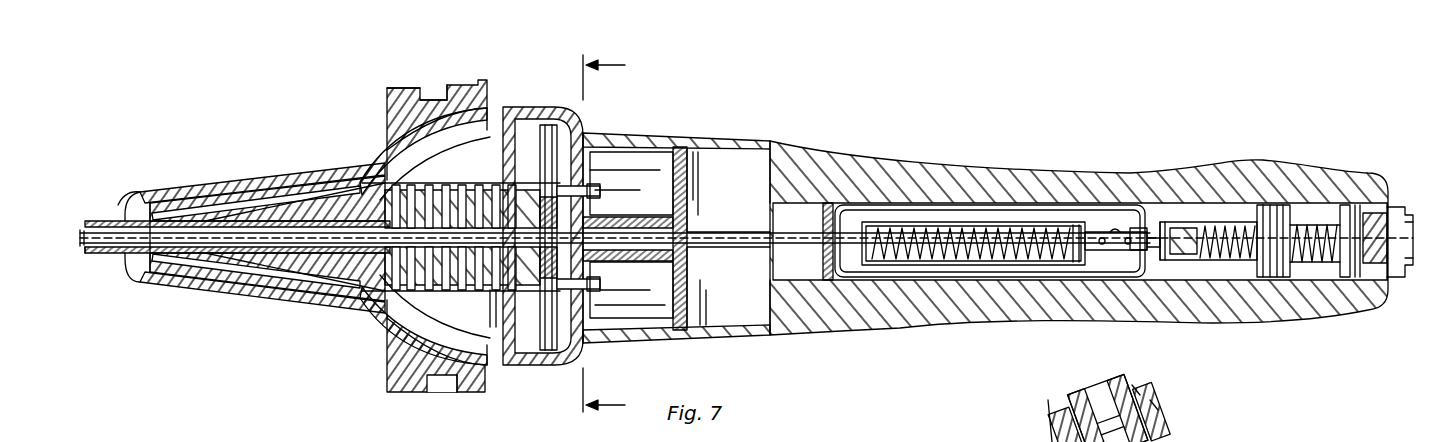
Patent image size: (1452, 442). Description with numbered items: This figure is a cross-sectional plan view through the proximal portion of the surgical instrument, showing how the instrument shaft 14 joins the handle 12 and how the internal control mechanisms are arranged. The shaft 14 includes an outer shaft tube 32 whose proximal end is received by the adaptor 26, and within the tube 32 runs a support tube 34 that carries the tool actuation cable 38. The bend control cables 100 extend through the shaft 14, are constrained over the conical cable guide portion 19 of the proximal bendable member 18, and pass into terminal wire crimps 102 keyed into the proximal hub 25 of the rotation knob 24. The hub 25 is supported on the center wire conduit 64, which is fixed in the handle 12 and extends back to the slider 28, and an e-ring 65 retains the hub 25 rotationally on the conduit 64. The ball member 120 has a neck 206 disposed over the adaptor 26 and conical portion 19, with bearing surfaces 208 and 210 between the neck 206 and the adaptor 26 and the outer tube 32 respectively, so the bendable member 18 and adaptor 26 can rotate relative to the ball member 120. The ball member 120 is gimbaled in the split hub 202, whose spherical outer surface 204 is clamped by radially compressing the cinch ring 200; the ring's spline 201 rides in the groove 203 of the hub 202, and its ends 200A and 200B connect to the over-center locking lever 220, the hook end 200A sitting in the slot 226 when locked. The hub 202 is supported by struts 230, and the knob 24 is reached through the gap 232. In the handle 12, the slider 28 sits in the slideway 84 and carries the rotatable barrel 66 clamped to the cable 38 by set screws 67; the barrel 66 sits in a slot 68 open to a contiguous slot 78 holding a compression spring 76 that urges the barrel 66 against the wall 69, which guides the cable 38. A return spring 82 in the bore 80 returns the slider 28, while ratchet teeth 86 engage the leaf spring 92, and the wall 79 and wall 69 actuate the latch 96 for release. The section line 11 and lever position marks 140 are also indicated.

The section line 11- 11 is at (616, 236).
The handle 12 is at (860, 152).
The instrument shaft 14 is at (95, 200).
The proximal bendable member 18 is at (405, 168).
The conical cable guide portion 19 is at (262, 262).
The rotation knob 24 is at (541, 110).
The proximal hub 25 is at (632, 222).
The adaptor 26 is at (217, 272).
The slider 28 is at (980, 205).
The outer shaft tube 32 is at (136, 212).
The support tube 34 is at (86, 252).
The tool actuation cable 38 is at (300, 285).
The center wire conduit 64 is at (703, 232).
The e-ring 65 is at (533, 283).
The rotatable barrel 66 is at (1095, 232).
The set screws 67 is at (1100, 250).
The slot 68 is at (1118, 232).
The wall 69 is at (1148, 262).
The compression spring 76 is at (905, 258).
The contiguous slot 78 is at (948, 262).
The wall 79 is at (1230, 223).
The bore 80 is at (1360, 328).
The return spring 82 is at (1360, 207).
The slideway 84 is at (1177, 207).
The teeth 86 is at (1285, 277).
The leaf spring 92 is at (1296, 220).
The latch 96 is at (1195, 262).
The bend control cables 100 is at (247, 248).
The terminal wire crimps 102 is at (598, 186).
The ball member 120 is at (373, 318).
The mounting assembly 140 is at (380, 75).
The cinch ring 200 is at (440, 100).
The cinch ring end 200A is at (1062, 392).
The cinch ring end 200B is at (1130, 392).
The spline 201 is at (430, 100).
The split hub 202 is at (397, 377).
The groove 203 is at (456, 100).
The spherical outer surface 204 is at (457, 367).
The neck 206 is at (297, 170).
The bearing surface 208 is at (357, 165).
The bearing surface 210 is at (130, 285).
The over-center locking lever 220 is at (1152, 400).
The slot 226 is at (1110, 398).
The struts 230 is at (490, 327).
The gap 232 is at (494, 112).